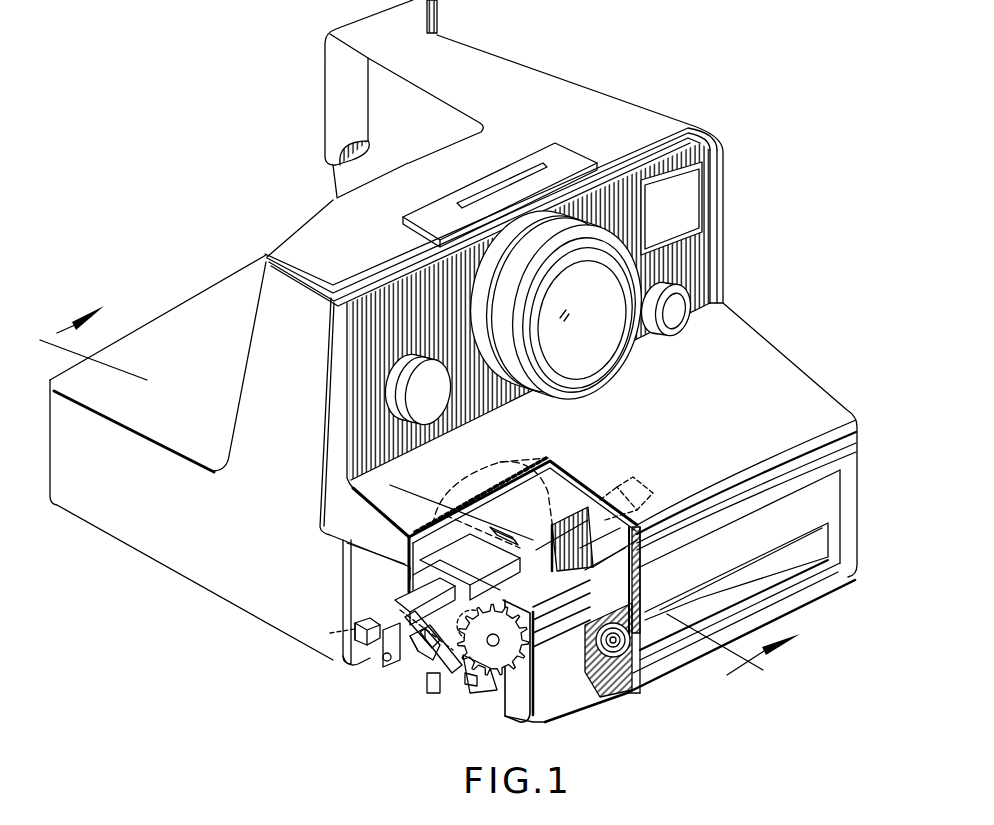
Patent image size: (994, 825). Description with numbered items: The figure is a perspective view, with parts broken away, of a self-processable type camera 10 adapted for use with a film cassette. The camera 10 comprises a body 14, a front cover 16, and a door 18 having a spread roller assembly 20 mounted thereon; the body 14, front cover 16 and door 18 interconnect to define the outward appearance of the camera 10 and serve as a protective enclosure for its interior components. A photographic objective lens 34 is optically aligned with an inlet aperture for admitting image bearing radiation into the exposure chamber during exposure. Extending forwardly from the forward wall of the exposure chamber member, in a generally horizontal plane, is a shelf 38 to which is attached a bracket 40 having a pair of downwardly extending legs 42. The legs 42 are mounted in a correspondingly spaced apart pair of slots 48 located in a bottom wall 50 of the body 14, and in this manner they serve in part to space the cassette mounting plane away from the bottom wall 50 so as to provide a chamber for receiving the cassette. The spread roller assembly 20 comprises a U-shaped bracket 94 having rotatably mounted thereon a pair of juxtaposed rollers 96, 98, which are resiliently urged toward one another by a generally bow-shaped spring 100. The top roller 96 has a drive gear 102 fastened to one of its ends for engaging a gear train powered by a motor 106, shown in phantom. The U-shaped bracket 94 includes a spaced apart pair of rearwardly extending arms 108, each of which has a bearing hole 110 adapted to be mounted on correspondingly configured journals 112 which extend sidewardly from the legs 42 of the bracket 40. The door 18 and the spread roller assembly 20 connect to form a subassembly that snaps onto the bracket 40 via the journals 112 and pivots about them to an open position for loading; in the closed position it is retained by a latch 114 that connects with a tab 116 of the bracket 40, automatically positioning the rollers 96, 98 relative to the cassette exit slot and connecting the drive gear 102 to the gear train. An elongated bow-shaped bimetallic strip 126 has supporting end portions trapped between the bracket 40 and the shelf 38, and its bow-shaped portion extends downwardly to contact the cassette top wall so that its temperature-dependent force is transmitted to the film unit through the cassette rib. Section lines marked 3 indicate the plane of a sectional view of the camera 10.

The section line 3- 3 is at (426, 486).
The camera 10 is at (690, 102).
The body 14 is at (213, 252).
The front cover 16 is at (812, 346).
The door 18 is at (885, 494).
The spread roller assembly 20 is at (583, 722).
The photographic objective lens 34 is at (530, 268).
The shelf 38 is at (537, 586).
The bracket 40 is at (408, 667).
The legs 42 is at (437, 662).
The slots 48 is at (350, 653).
The bottom wall 50 is at (365, 660).
The U-shaped bracket 94 is at (533, 720).
The top roller 96 is at (578, 645).
The roller 98 is at (583, 615).
The bow-shaped spring 100 is at (592, 674).
The drive gear 102 is at (500, 672).
The motor 106 is at (513, 462).
The rearwardly extending arms 108 is at (401, 620).
The bearing hole 110 is at (408, 655).
The journals 112 is at (384, 663).
The latch 114 is at (458, 669).
The tab 116 is at (461, 597).
The bimetallic strip 126 is at (635, 479).